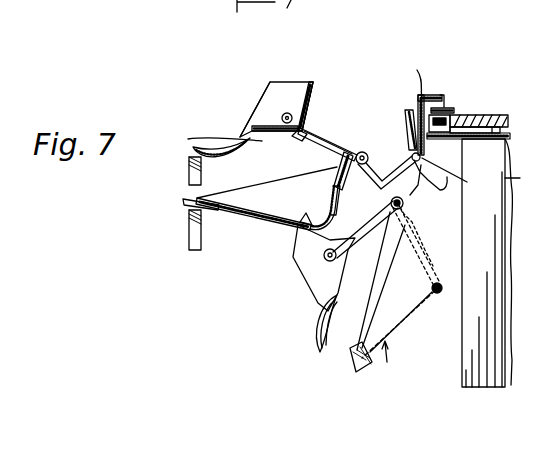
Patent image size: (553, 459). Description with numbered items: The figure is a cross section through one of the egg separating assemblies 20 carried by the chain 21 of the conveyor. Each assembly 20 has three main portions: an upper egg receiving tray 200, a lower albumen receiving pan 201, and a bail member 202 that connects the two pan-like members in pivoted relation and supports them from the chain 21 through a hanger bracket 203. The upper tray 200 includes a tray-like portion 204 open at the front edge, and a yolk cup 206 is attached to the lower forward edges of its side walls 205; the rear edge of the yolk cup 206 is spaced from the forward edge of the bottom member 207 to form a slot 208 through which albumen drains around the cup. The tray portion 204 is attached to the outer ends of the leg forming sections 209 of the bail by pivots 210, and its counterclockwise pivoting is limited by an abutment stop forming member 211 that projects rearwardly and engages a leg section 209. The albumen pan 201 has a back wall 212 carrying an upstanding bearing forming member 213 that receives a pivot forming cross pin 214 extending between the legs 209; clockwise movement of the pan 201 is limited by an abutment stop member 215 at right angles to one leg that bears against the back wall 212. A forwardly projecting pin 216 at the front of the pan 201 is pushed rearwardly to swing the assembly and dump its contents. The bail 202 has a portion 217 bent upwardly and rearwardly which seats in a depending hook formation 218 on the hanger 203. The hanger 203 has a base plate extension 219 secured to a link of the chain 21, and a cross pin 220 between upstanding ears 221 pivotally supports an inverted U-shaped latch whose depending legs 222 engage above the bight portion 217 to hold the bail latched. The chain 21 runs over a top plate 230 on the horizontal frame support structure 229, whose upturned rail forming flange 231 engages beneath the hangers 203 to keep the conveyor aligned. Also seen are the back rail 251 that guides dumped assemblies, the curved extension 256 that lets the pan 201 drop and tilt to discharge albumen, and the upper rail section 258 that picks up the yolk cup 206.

The separating assembly 20 is at (392, 362).
The chain 21 is at (487, 263).
The upper egg receiving tray 200 is at (267, 83).
The lower albumen receiving pan 201 is at (253, 216).
The bail member 202 is at (378, 128).
The hanger bracket 203 is at (441, 123).
The tray-like portion 204 is at (298, 88).
The side walls 205 is at (233, 138).
The yolk cup 206 is at (200, 143).
The bottom member 207 is at (265, 140).
The slot 208 is at (241, 130).
The leg forming sections 209 is at (317, 128).
The pivots 210 is at (286, 113).
The abutment stop forming member 211 is at (305, 136).
The back wall 212 is at (318, 202).
The bearing forming member 213 is at (334, 208).
The pivot forming cross pin 214 is at (359, 150).
The abutment stop member 215 is at (337, 166).
The forwardly projecting pin 216 is at (180, 209).
The bent portion 217 is at (419, 224).
The depending hook formation 218 is at (424, 145).
The base plate extension 219 is at (470, 103).
The cross pin 220 is at (428, 93).
The upstanding ears 221 is at (473, 87).
The depending legs 222 is at (405, 128).
The horizontal frame support structure 229 is at (529, 184).
The top plate 230 is at (505, 131).
The rail forming flange 231 is at (488, 106).
The back rail 251 is at (442, 283).
The curved extension 256 is at (183, 231).
The upper rail section 258 is at (187, 163).